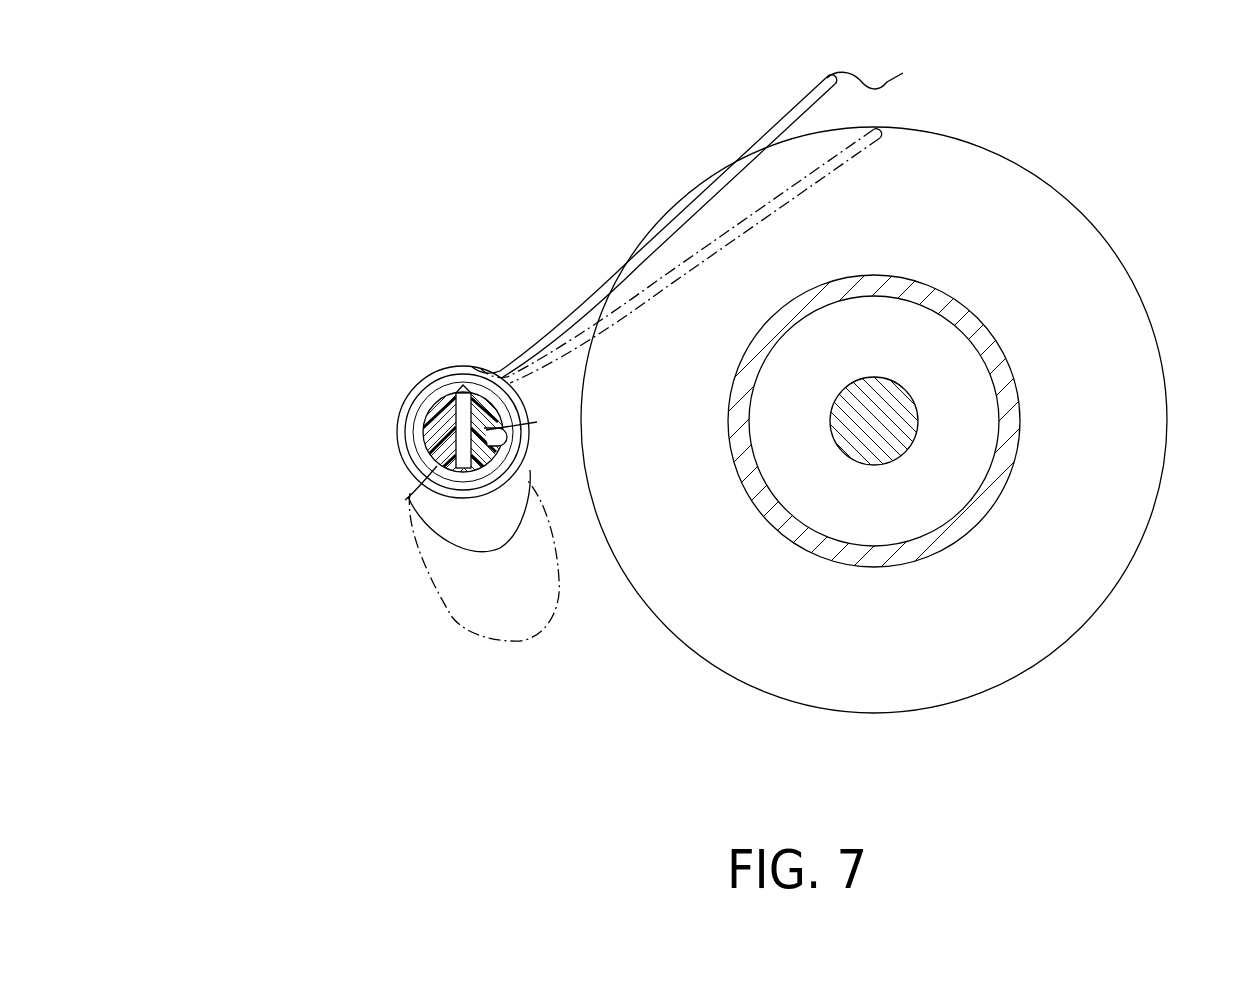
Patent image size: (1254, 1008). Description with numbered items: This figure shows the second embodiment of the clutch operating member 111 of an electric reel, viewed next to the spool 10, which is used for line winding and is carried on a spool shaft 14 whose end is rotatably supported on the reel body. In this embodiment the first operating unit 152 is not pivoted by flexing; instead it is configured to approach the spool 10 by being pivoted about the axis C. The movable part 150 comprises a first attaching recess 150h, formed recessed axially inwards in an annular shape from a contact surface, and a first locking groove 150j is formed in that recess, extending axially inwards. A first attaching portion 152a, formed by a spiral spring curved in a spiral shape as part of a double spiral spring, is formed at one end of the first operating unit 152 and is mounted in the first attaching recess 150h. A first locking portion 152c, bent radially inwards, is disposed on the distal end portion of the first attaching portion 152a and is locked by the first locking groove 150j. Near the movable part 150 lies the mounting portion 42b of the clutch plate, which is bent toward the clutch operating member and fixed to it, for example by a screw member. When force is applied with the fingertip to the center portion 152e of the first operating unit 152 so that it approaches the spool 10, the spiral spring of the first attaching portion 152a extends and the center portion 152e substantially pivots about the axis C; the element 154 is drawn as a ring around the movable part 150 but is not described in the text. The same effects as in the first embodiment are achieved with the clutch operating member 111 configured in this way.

The spool 10 is at (990, 300).
The spool shaft 14 is at (890, 447).
The first operating unit 152 is at (653, 278).
The center portion 152e is at (896, 128).
The outer ring 154 is at (437, 373).
The movable part 150 is at (412, 477).
The mounting portion 42b is at (418, 420).
The axis C is at (422, 436).
The first attaching recess 150h is at (412, 452).
The first attaching portion 152a is at (437, 466).
The first locking portion 152c is at (537, 422).
The first locking groove 150j is at (495, 442).
The clutch operating member 111 is at (440, 313).